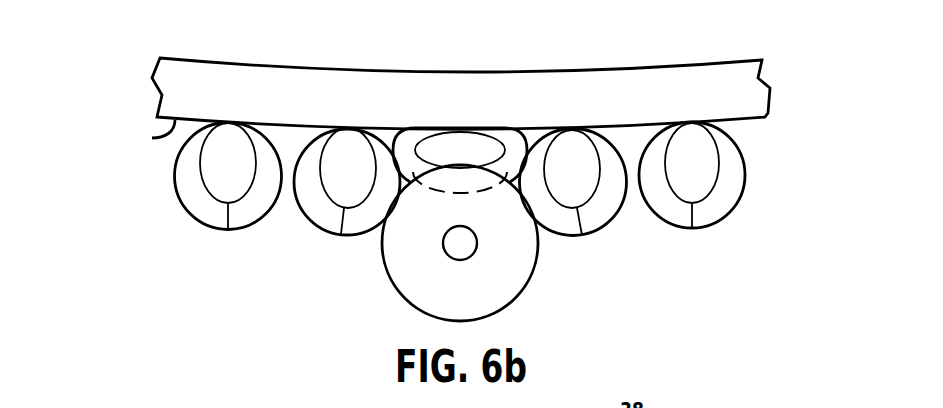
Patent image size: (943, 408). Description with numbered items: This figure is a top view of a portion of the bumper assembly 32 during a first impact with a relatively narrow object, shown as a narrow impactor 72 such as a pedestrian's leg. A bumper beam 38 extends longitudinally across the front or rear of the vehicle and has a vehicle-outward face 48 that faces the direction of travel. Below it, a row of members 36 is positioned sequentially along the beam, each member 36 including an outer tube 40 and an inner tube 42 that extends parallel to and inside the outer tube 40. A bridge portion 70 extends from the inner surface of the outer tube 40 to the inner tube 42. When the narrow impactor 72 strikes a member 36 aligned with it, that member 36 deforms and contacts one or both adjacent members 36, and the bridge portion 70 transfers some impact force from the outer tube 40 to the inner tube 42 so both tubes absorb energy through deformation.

The bumper assembly 32 is at (104, 160).
The member 36 is at (738, 220).
The bumper beam 38 is at (587, 68).
The outer tube 40 is at (733, 138).
The inner tube 42 is at (720, 172).
The vehicle-outward face 48 is at (152, 138).
The bridge portion 70 is at (694, 215).
The narrow impactor 72 is at (384, 265).